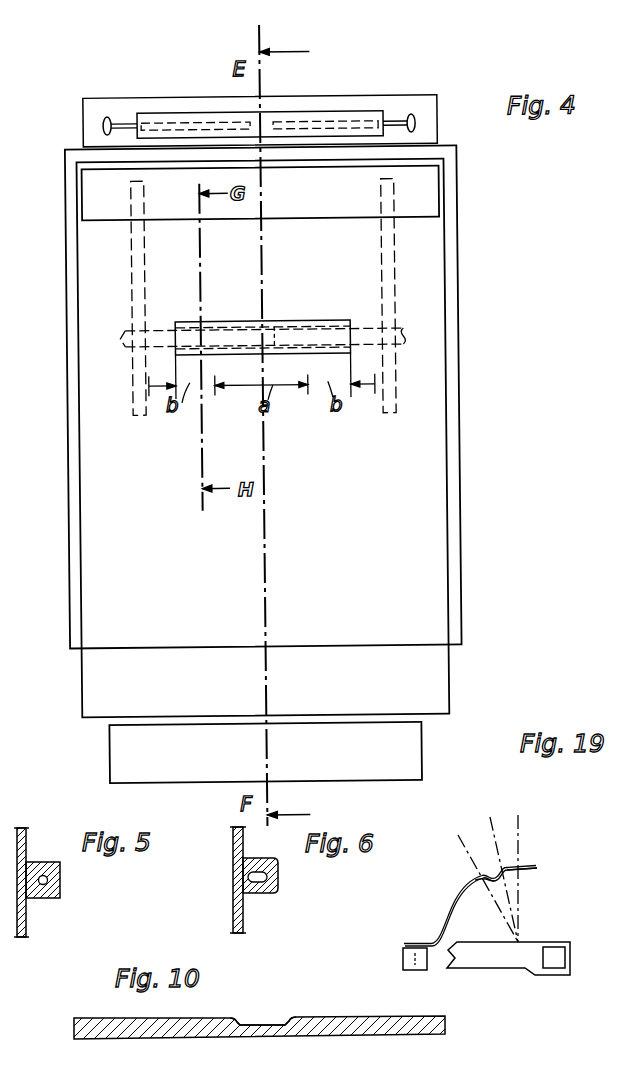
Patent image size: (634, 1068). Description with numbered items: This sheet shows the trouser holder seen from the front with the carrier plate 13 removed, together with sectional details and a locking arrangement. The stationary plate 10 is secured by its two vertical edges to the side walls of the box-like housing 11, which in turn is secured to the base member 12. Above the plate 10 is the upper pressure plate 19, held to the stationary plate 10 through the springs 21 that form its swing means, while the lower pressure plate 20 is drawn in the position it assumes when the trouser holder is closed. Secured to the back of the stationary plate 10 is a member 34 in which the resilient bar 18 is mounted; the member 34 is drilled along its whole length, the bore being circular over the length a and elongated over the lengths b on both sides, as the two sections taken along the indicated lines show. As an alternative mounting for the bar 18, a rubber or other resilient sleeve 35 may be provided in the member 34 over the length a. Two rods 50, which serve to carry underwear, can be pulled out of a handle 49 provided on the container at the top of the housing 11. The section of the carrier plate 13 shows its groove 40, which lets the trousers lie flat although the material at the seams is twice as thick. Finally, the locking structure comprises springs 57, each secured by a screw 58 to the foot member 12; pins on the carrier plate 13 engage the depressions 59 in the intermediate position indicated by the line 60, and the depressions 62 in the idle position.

In FIG. 4, the stationary plate 10 is at (435, 414).
In FIG. 5, the stationary plate 10 is at (26, 918).
In FIG. 6, the stationary plate 10 is at (240, 912).
In FIG. 4, the box-like housing 11 is at (446, 569).
In FIG. 19, the base member 12 is at (534, 945).
In FIG. 10, the carrier plate 13 is at (365, 1020).
In FIG. 4, the resilient bar 18 is at (234, 330).
In FIG. 4, the upper pressure plate 19 is at (439, 192).
In FIG. 4, the lower pressure plate 20 is at (411, 759).
In FIG. 4, the springs 21 is at (134, 259).
In FIG. 4, the member 34 is at (312, 322).
In FIG. 5, the member 34 is at (60, 885).
In FIG. 6, the member 34 is at (265, 893).
In FIG. 4, the resilient sleeve 35 is at (274, 325).
In FIG. 10, the groove 40 is at (271, 1020).
In FIG. 4, the handle 49 is at (323, 110).
In FIG. 4, the rods 50 is at (121, 120).
In FIG. 19, the springs 57 is at (460, 903).
In FIG. 19, the screw 58 is at (413, 940).
In FIG. 19, the depressions 59 is at (506, 868).
In FIG. 19, the line indicating intermediate position 60 is at (487, 824).
In FIG. 19, the depressions 62 is at (482, 880).